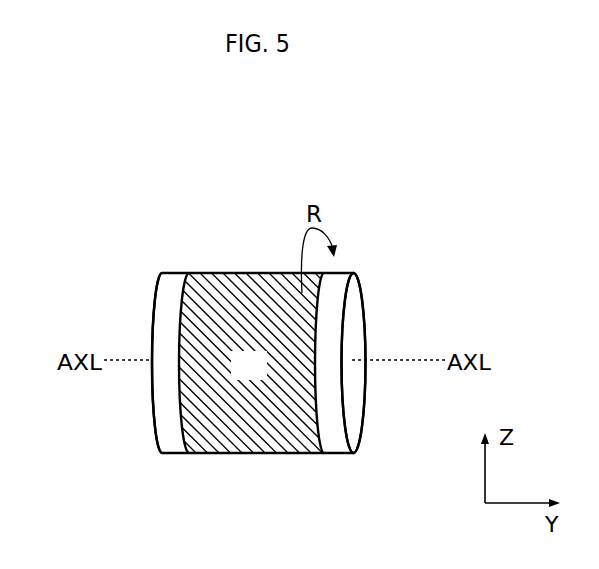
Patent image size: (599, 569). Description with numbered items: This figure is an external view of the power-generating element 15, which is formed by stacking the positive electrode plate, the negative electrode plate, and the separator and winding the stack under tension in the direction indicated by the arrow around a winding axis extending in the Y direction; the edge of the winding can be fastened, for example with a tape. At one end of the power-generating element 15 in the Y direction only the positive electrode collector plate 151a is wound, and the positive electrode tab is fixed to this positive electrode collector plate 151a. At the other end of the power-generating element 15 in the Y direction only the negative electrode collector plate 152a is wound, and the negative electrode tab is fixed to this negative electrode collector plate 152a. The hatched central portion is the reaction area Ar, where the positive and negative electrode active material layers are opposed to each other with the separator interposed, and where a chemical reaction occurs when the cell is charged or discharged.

The power-generating element 15 is at (209, 258).
The positive electrode collector plate 151a is at (160, 312).
The negative electrode collector plate 152a is at (330, 311).
The reaction area Ar is at (262, 376).